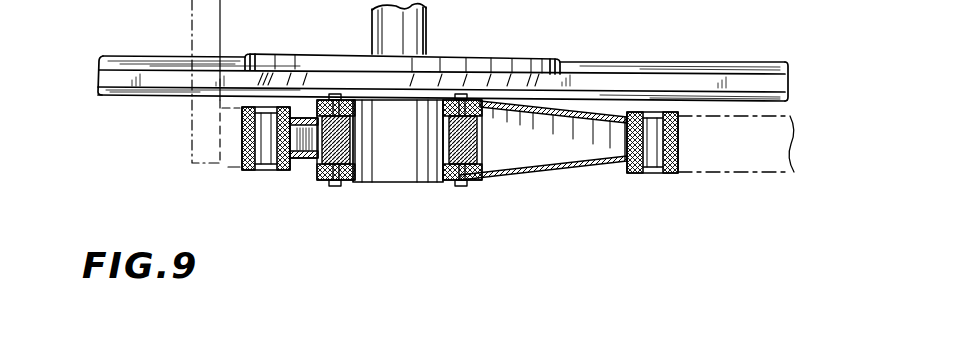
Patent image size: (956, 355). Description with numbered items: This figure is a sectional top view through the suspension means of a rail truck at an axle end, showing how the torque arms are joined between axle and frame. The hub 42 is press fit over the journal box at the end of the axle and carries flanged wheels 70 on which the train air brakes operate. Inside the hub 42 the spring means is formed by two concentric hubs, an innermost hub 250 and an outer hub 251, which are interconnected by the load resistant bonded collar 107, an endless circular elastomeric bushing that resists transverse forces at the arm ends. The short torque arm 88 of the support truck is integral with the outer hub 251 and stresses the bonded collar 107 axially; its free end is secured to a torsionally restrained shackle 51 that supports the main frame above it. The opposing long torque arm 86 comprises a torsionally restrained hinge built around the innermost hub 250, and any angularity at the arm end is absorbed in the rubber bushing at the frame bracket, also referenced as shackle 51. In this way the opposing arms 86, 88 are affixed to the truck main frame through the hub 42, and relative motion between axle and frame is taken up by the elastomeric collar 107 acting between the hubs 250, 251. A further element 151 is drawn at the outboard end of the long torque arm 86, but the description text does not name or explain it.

The hub 42 is at (435, 183).
The shackle 51 is at (282, 170).
The flanged wheels 70 is at (283, 55).
The long torque arm 86 is at (582, 171).
The short torque arm 88 is at (307, 165).
The bonded collar 107 is at (481, 160).
The bearing 151 is at (668, 175).
The innermost hub 250 is at (361, 108).
The outer hub 251 is at (483, 131).